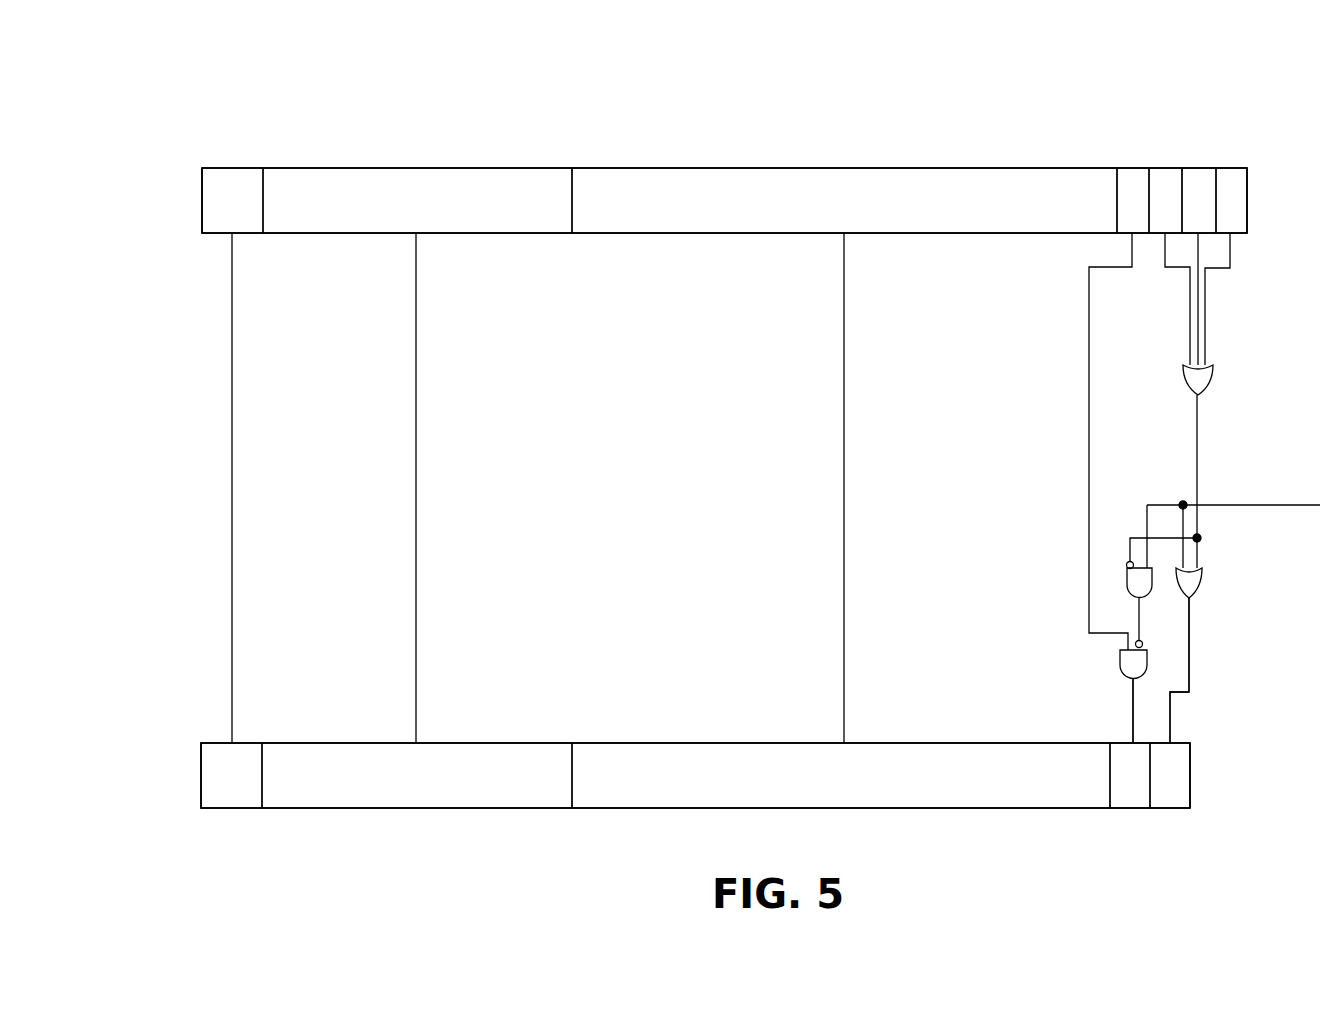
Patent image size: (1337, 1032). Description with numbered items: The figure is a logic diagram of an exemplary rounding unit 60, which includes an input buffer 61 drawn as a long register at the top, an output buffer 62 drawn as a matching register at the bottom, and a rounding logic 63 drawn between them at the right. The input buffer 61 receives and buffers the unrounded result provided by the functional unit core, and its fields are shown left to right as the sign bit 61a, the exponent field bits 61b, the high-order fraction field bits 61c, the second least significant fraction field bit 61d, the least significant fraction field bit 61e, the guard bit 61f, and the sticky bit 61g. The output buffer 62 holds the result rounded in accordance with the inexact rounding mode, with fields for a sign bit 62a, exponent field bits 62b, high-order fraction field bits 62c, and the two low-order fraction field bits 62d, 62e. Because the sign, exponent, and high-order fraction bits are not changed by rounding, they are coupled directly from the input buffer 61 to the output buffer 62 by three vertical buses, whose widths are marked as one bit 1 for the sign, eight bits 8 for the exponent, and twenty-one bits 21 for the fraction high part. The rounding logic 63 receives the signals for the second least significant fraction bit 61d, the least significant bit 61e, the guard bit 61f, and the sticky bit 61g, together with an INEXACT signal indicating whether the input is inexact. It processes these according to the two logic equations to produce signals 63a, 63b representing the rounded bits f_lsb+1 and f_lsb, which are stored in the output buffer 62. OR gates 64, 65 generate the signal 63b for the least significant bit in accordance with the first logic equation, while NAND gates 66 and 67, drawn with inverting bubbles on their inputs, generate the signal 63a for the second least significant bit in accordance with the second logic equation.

The rounding unit 60 is at (538, 102).
The input buffer 61 is at (202, 200).
The sign bit 61a is at (243, 168).
The exponent field bits 61b is at (412, 168).
The high-order fraction field bits 61c is at (843, 168).
The second least significant fraction field bit 61d is at (1133, 168).
The least significant fraction field bit 61e is at (1165, 168).
The guard bit 61f is at (1198, 168).
The sticky bit 61g is at (1230, 168).
The output buffer 62 is at (201, 778).
The sign bit 62a is at (232, 808).
The exponent field bits 62b is at (413, 808).
The fraction field bits 62c is at (843, 808).
The fraction field bit 62d is at (1128, 808).
The fraction field bit 62e is at (1170, 808).
The sign bit line (1 bit) 1 is at (222, 433).
The exponent bus (8 bits) 8 is at (406, 408).
The fraction high part bus (21 bits) 21 is at (833, 374).
The rounding logic 63 is at (1056, 551).
The signal representative of second least significant bit 63a is at (1134, 713).
The signal representative of least significant bit 63b is at (1170, 725).
The OR gate 64 is at (1212, 378).
The OR gate 65 is at (1202, 581).
The NAND gate 66 is at (1127, 585).
The NAND gate 67 is at (1120, 672).